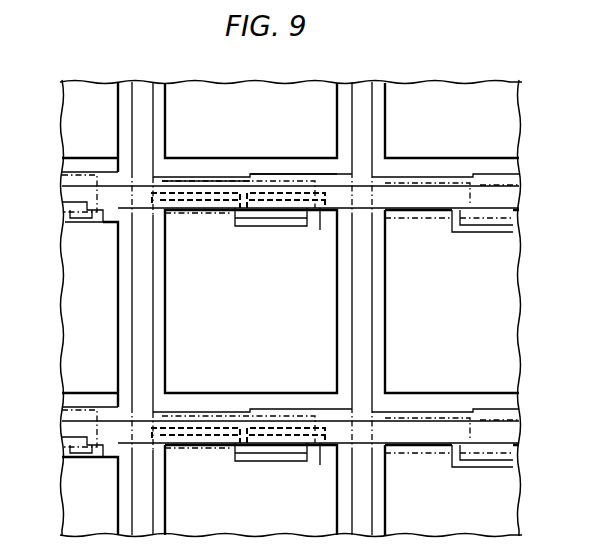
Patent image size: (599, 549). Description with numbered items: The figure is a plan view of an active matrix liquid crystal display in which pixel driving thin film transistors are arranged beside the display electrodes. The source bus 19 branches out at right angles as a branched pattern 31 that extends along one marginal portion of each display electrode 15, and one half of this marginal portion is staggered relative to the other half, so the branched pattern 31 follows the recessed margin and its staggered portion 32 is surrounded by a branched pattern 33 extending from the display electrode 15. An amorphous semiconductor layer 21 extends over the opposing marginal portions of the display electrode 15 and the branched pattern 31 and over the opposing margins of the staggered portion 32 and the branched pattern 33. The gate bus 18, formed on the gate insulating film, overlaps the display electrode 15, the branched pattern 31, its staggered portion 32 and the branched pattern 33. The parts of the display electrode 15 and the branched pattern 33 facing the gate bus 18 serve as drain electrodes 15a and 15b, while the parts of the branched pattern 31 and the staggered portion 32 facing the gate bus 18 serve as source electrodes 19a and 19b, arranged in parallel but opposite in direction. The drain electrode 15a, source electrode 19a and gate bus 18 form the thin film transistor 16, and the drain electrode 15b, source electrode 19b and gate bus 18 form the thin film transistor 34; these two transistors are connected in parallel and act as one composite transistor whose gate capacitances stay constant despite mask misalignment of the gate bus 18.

The display electrode 15 is at (75, 306).
The drain electrode 15a is at (197, 207).
The drain electrode 15b is at (295, 185).
The thin film transistor 16 is at (225, 210).
The gate bus 18 is at (378, 188).
The source bus 19 is at (140, 123).
The source electrode 19a is at (198, 178).
The source electrode 19b is at (278, 224).
The amorphous semiconductor layer 21 is at (318, 215).
The branched pattern 31 is at (222, 176).
The staggered portion 32 is at (250, 228).
The branched pattern 33 is at (265, 178).
The thin film transistor 34 is at (304, 228).